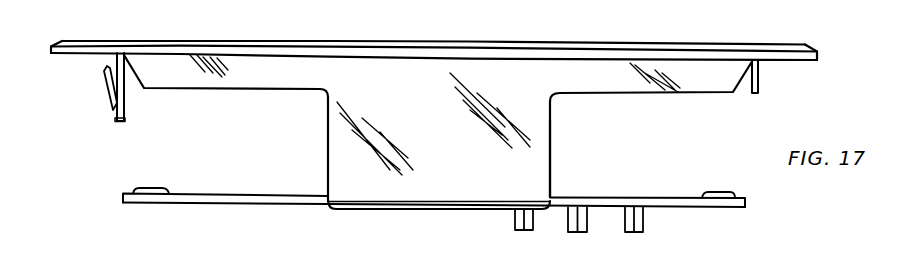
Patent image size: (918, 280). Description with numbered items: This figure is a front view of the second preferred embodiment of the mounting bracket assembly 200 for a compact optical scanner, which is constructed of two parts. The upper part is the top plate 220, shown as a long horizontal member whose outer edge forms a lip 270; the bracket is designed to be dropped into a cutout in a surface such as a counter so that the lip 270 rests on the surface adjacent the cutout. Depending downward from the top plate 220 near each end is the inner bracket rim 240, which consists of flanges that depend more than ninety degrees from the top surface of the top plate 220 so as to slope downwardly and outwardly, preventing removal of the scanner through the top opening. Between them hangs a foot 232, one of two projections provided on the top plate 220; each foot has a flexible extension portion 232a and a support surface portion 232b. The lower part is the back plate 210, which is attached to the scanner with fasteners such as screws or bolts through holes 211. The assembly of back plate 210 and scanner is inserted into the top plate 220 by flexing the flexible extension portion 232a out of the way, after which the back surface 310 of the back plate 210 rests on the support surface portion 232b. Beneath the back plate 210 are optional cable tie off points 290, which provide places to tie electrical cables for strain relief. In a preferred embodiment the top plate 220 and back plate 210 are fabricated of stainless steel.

The mounting bracket assembly 200 is at (80, 41).
The top plate 220 is at (212, 41).
The lip 270 is at (73, 57).
The inner bracket rim 240 is at (124, 93).
The foot 232 is at (553, 124).
The flexible extension portion 232a is at (552, 160).
The support surface portion 232b is at (335, 212).
The back plate 210 is at (234, 193).
The back surface 310 is at (257, 204).
The holes 211 is at (150, 188).
The cable tie off points 290 is at (630, 232).